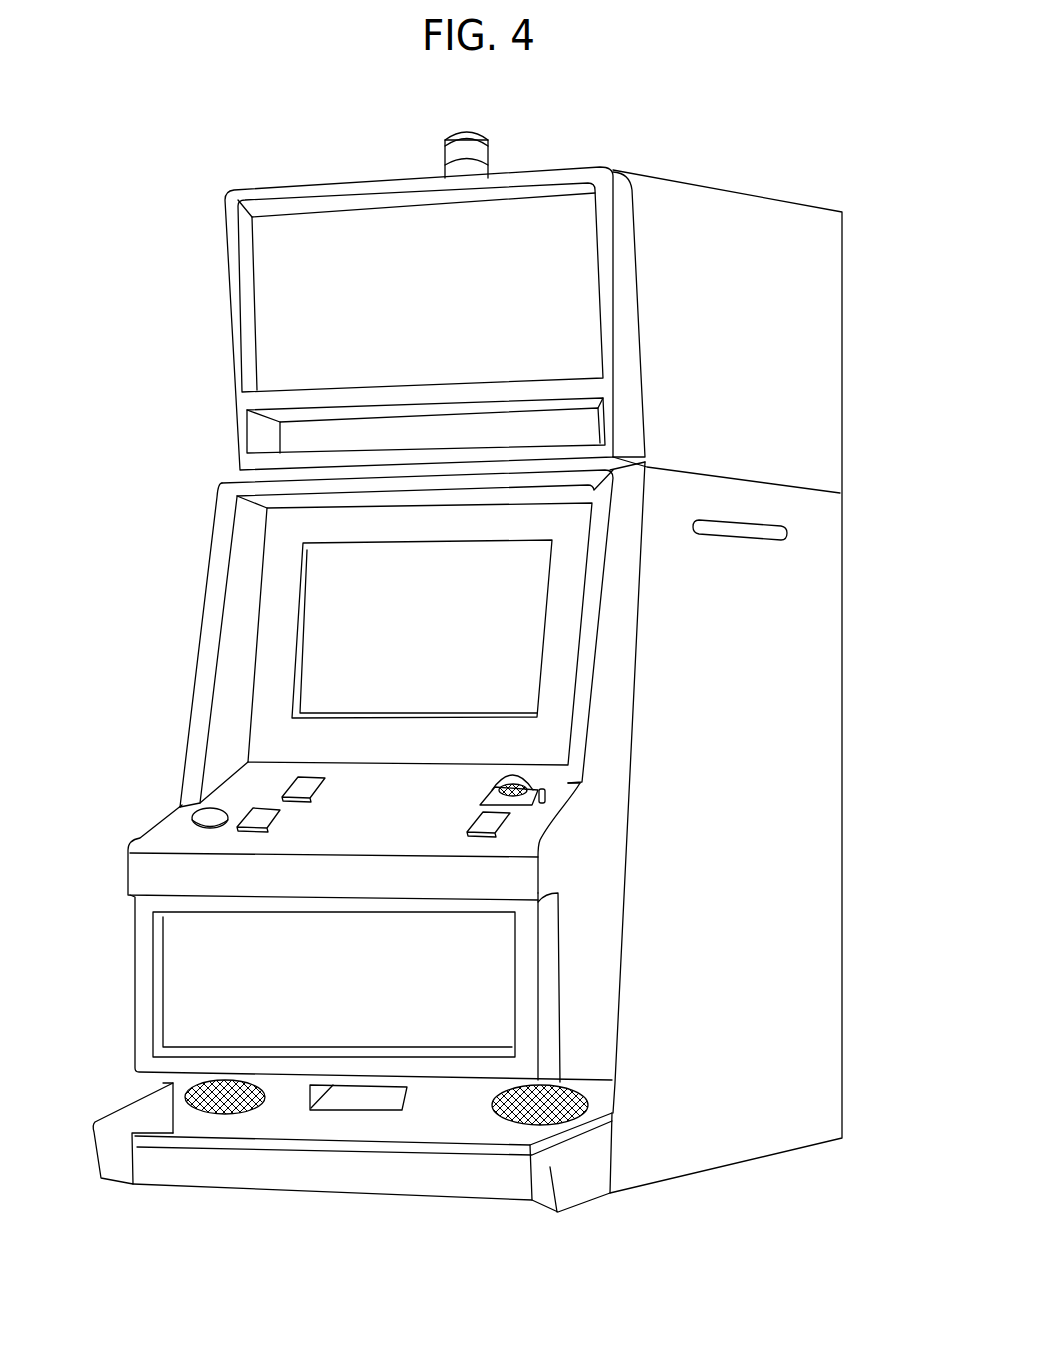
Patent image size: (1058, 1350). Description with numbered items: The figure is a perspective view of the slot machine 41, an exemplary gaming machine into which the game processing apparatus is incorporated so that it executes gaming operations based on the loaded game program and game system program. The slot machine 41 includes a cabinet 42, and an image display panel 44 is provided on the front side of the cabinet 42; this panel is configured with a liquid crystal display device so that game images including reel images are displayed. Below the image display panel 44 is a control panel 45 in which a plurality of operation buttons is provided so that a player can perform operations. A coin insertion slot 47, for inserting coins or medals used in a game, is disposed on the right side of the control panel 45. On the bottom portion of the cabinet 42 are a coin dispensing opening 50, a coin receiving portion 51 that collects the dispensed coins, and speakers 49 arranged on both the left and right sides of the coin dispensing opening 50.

The slot machine 41 is at (750, 150).
The cabinet 42 is at (803, 678).
The image display panel 44 is at (330, 572).
The control panel 45 is at (157, 838).
The coin insertion slot 47 is at (518, 800).
The speakers 49 is at (572, 1125).
The coin dispensing opening 50 is at (360, 1102).
The coin receiving portion 51 is at (228, 1133).